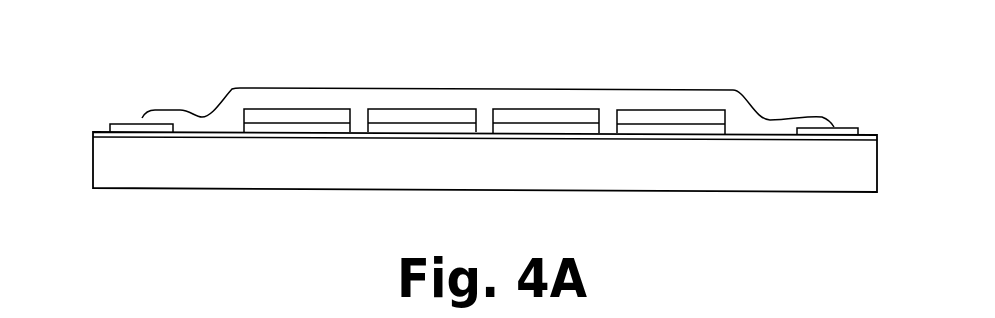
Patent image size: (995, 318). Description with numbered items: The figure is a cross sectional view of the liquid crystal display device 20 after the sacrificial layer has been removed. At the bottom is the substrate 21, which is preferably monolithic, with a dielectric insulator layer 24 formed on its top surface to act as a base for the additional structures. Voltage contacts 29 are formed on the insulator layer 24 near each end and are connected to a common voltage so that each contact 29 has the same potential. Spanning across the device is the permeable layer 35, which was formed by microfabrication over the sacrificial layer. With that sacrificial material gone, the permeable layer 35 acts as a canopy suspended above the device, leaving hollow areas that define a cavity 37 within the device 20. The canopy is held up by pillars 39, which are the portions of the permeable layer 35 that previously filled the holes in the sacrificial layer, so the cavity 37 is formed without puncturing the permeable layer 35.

The liquid crystal display device 20 is at (507, 53).
The substrate 21 is at (93, 177).
The insulator layer 24 is at (93, 132).
The voltage contacts 29 is at (118, 123).
The permeable layer 35 is at (348, 88).
The cavity 37 is at (263, 108).
The pillars 39 is at (359, 128).